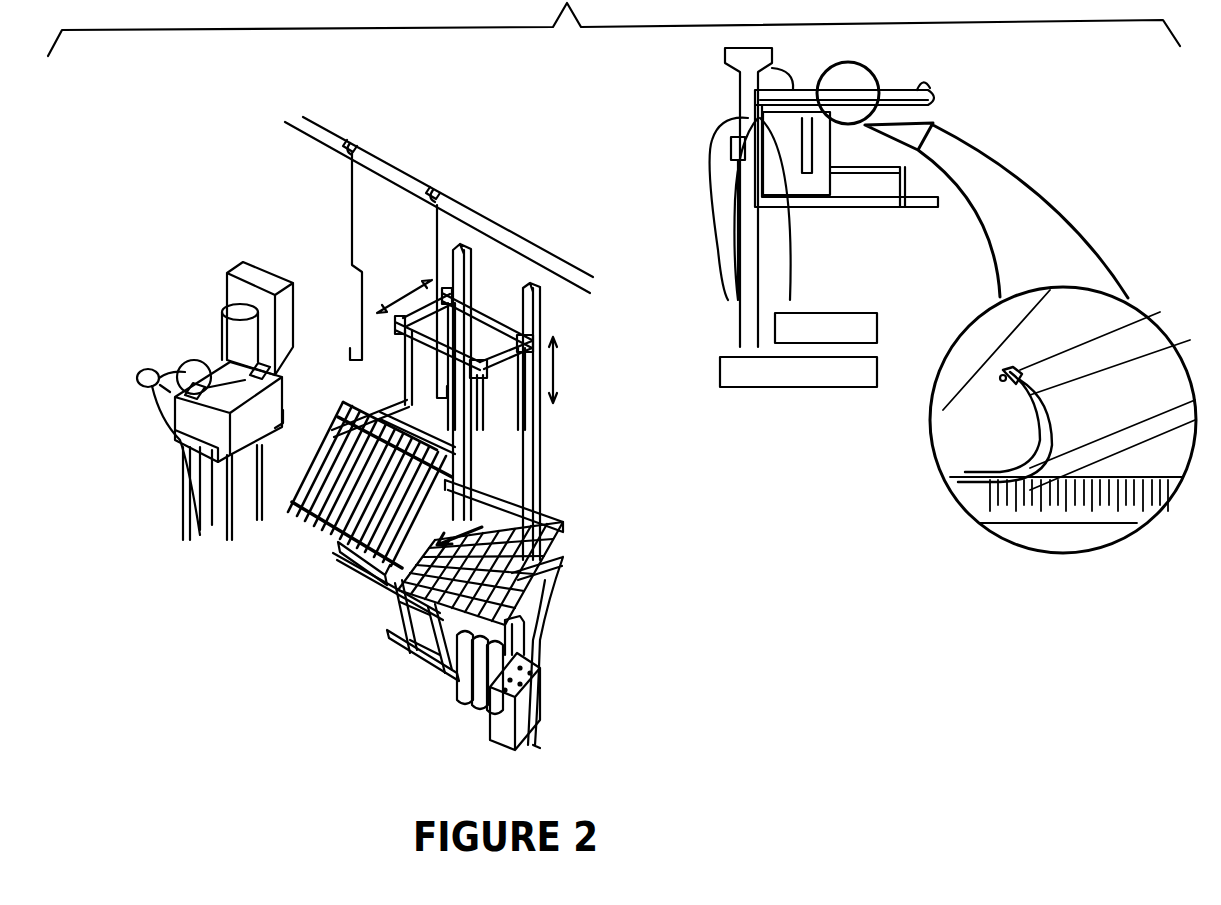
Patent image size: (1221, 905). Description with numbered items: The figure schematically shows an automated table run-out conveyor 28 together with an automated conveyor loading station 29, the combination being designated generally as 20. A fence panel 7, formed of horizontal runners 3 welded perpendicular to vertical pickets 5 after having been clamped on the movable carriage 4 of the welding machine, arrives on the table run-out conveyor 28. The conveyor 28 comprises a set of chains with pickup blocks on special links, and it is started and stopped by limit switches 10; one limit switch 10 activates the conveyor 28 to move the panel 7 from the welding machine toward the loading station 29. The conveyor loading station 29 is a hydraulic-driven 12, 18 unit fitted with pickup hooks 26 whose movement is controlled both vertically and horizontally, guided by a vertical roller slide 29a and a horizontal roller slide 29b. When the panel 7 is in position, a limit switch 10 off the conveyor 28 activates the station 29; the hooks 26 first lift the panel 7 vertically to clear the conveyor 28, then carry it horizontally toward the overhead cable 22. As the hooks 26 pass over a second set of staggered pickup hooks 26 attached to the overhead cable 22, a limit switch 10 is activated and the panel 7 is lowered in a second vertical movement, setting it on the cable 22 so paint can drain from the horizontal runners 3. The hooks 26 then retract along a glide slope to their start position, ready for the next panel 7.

The horizontal runners 3 is at (317, 513).
The movable carriage 4 is at (420, 560).
The vertical pickets 5 is at (333, 413).
The fence panel 7 is at (301, 435).
The limit switch 10 is at (581, 584).
The hydraulic cylinder 12 is at (735, 103).
The hydraulic-driven unit 18 is at (161, 332).
The combination of table run-out conveyor and conveyor loading station 20 is at (592, 402).
The overhead cable 22 is at (525, 244).
The pickup hooks 26 is at (352, 252).
The automated table run-out conveyor 28 is at (487, 530).
The automated conveyor loading station 29 is at (400, 266).
The vertical roller slide 29a is at (537, 453).
The horizontal roller slide 29b is at (443, 447).